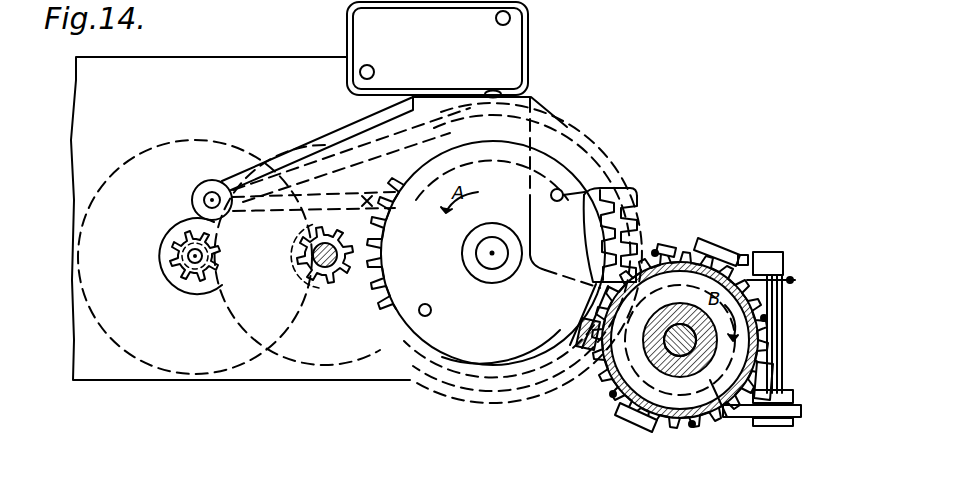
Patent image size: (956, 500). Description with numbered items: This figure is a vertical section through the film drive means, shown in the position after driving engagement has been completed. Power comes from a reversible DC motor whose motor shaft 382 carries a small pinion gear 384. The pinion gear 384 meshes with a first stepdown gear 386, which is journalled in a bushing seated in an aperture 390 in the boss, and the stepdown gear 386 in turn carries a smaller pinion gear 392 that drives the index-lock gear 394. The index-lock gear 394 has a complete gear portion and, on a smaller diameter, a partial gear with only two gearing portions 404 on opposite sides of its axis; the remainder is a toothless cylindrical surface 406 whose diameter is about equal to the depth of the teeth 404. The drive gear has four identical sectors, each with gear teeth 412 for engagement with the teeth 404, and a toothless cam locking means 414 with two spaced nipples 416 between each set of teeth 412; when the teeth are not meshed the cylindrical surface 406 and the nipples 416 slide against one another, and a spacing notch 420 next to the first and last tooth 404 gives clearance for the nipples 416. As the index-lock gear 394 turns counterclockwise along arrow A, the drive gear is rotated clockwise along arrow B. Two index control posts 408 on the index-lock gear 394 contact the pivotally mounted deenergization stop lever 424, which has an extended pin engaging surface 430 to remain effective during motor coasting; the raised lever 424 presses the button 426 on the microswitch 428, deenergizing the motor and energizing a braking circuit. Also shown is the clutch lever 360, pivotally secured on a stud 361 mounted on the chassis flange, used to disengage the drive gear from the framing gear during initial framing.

The clutch lever 360 is at (792, 280).
The stud 361 is at (795, 398).
The motor shaft 382 is at (190, 250).
The pinion gear 384 is at (187, 283).
The first stepdown gear 386 is at (243, 325).
The aperture 390 is at (723, 420).
The pinion gear 392 is at (325, 278).
The index-lock gear 394 is at (375, 308).
The gearing portions 404 is at (382, 276).
The toothless cylindrical surface 406 is at (442, 357).
The index control posts 408 is at (431, 310).
The gear teeth 412 is at (650, 250).
The cam locking means 414 is at (718, 252).
The nipples 416 is at (700, 240).
The spacing notch 420 is at (595, 246).
The deenergization stop lever 424 is at (348, 126).
The button 426 is at (500, 88).
The microswitch 428 is at (437, 48).
The pin engaging surface 430 is at (501, 162).